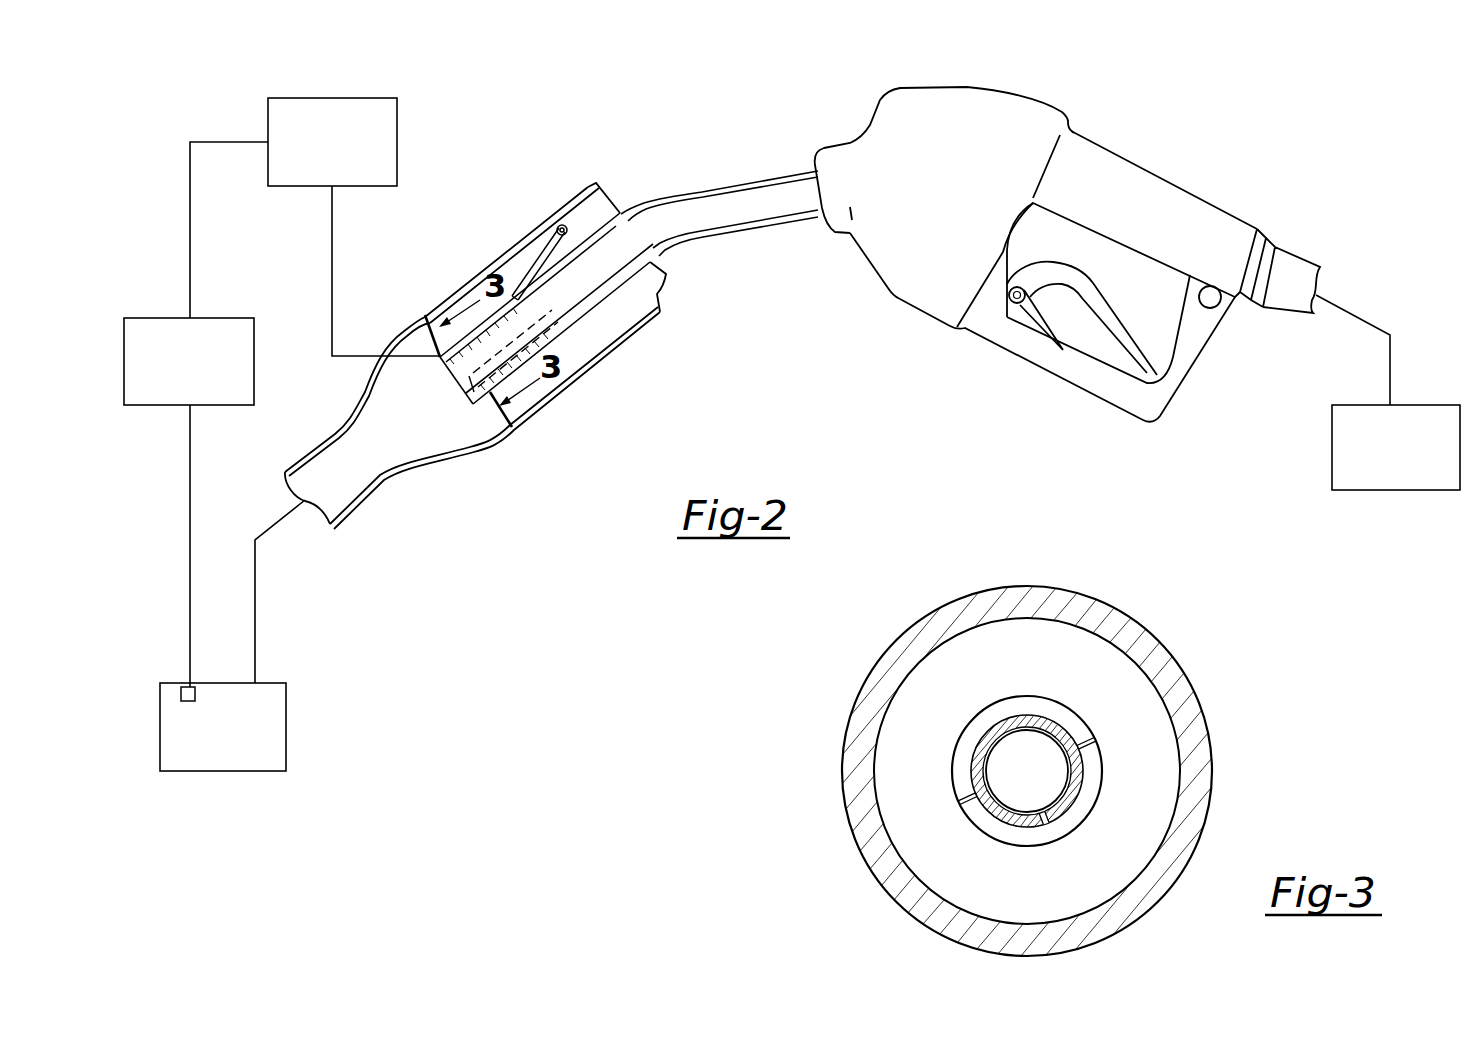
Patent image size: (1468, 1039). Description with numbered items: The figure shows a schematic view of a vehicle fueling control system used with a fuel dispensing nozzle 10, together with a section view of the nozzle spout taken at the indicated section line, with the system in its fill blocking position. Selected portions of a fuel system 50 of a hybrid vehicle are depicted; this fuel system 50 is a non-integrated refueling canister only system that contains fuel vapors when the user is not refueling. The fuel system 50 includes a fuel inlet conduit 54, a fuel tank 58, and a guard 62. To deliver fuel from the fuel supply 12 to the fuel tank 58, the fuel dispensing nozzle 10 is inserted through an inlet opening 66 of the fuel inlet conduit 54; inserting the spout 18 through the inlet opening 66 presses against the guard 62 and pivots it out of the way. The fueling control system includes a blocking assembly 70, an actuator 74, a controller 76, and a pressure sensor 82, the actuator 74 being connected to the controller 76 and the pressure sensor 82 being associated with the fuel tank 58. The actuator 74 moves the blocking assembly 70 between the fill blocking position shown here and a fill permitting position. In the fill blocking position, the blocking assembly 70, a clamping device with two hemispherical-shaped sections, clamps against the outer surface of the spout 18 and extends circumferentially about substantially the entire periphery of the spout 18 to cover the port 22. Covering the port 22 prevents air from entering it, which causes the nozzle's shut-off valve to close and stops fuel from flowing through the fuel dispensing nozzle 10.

In FIG. 2, the fuel dispensing nozzle 10 is at (1228, 157).
In FIG. 2, the fuel supply 12 is at (1332, 458).
In FIG. 2, the spout 18 is at (598, 292).
In FIG. 3, the spout 18 is at (963, 747).
In FIG. 3, the port 22 is at (1040, 800).
In FIG. 2, the fuel system 50 is at (478, 222).
In FIG. 2, the fuel inlet conduit 54 is at (519, 418).
In FIG. 3, the fuel inlet conduit 54 is at (1087, 592).
In FIG. 2, the fuel tank 58 is at (287, 725).
In FIG. 2, the guard 62 is at (549, 241).
In FIG. 2, the inlet opening 66 is at (660, 258).
In FIG. 2, the blocking assembly 70 is at (486, 412).
In FIG. 3, the blocking assembly 70 is at (1083, 717).
In FIG. 2, the actuator 74 is at (320, 171).
In FIG. 2, the controller 76 is at (177, 389).
In FIG. 2, the pressure sensor 82 is at (180, 684).